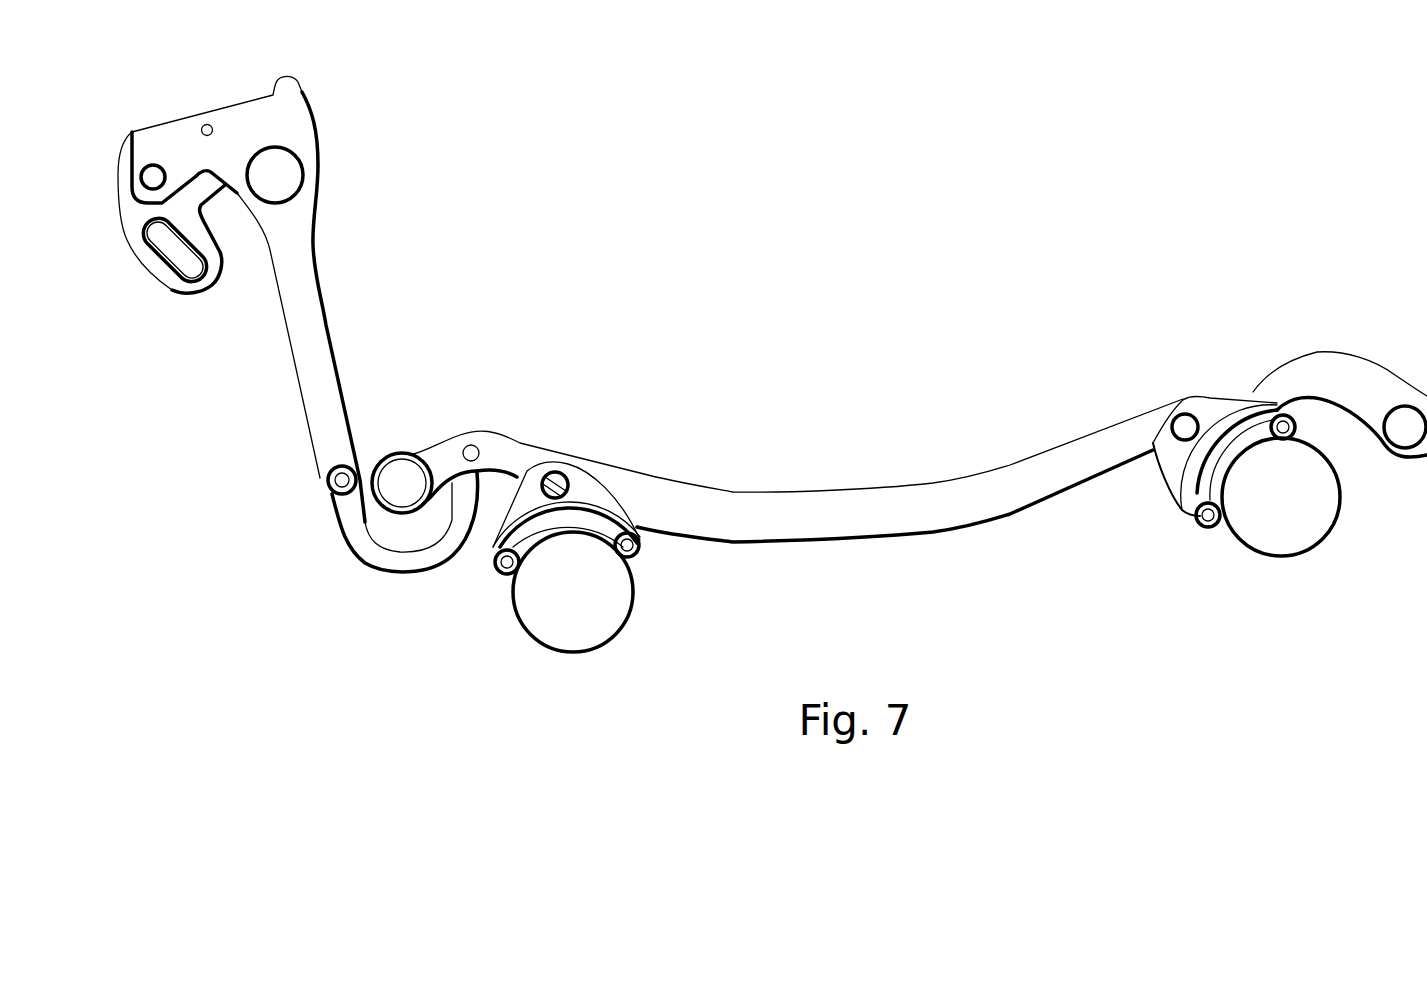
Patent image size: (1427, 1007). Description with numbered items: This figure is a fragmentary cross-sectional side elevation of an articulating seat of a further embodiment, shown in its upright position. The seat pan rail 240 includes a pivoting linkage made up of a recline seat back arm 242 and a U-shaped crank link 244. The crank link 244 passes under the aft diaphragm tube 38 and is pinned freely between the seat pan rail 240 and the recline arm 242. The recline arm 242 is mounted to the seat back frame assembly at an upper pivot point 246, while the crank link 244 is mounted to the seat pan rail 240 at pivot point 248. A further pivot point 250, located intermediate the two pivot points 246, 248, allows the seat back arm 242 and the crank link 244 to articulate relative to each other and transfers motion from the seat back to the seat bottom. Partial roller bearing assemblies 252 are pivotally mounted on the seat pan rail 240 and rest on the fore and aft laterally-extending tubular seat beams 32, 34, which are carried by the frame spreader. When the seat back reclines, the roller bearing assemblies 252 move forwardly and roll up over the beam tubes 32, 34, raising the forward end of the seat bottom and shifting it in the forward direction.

The fore tubular seat beam 32 is at (1340, 500).
The aft tubular seat beam 34 is at (635, 613).
The aft diaphragm tube 38 is at (400, 475).
The seat pan rail 240 is at (997, 473).
The recline seat back arm 242 is at (322, 337).
The U-shaped crank link 244 is at (400, 565).
The pivot point 246 is at (290, 178).
The pivot point 248 is at (472, 445).
The pivot point 250 is at (341, 480).
The partial roller bearing assembly 252 is at (590, 487).